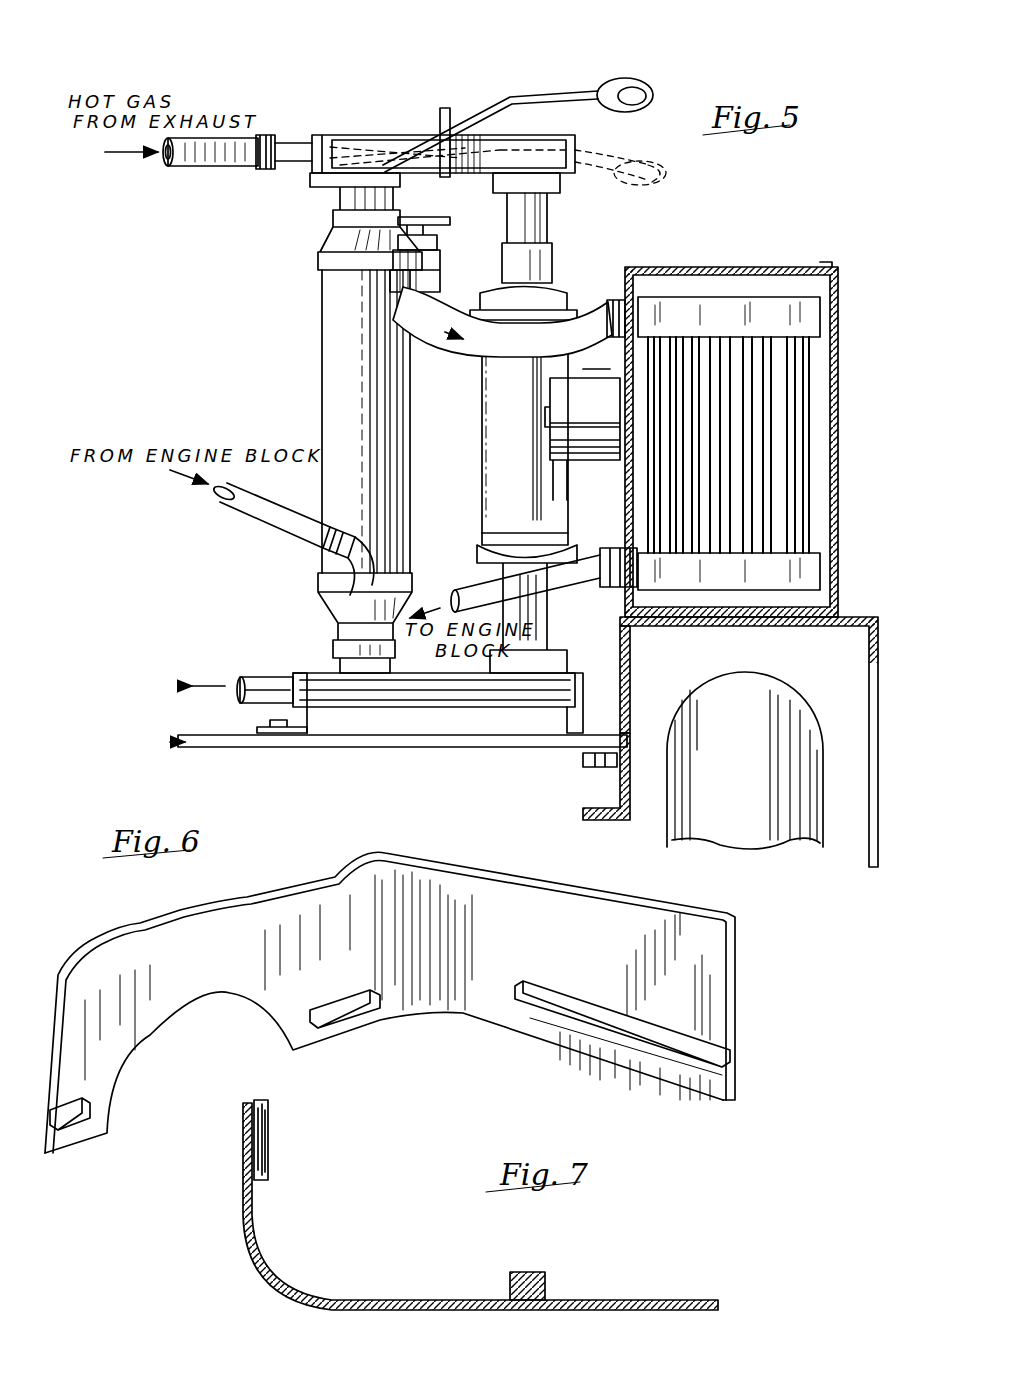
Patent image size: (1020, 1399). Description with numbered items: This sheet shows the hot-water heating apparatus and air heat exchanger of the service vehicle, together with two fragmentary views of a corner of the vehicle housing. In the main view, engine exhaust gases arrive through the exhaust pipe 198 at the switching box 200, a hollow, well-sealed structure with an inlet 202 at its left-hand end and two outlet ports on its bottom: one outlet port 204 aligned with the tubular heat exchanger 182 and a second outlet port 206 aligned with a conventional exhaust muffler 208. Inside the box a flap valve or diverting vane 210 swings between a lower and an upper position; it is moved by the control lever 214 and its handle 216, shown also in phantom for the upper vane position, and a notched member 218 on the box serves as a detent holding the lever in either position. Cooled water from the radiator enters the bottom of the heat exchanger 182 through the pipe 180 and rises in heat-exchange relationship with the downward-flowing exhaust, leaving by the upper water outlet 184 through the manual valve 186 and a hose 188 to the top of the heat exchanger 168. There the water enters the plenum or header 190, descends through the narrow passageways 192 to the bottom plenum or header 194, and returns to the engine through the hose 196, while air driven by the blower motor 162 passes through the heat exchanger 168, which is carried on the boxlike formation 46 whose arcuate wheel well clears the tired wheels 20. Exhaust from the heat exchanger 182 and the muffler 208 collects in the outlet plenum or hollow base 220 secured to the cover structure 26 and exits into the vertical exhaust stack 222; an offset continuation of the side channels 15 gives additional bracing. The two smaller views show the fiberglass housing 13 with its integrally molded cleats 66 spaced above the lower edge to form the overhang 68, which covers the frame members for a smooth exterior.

In FIG. 5, the exhaust pipe 198 is at (222, 165).
In FIG. 5, the switching box 200 is at (378, 135).
In FIG. 5, the inlet 202 is at (305, 135).
In FIG. 5, the outlet port 204 is at (350, 180).
In FIG. 5, the outlet port 206 is at (628, 180).
In FIG. 5, the exhaust muffler 208 is at (482, 478).
In FIG. 5, the flap valve or diverting vane 210 is at (350, 135).
In FIG. 5, the control lever 214 is at (503, 103).
In FIG. 5, the handle 216 is at (628, 85).
In FIG. 5, the notched member 218 is at (440, 120).
In FIG. 5, the outlet plenum or hollow base 220 is at (455, 712).
In FIG. 5, the exhaust stack 222 is at (265, 690).
In FIG. 5, the pipe 180 is at (288, 527).
In FIG. 5, the tubular heat exchanger 182 is at (325, 384).
In FIG. 5, the upper water outlet 184 is at (372, 305).
In FIG. 5, the manual valve 186 is at (395, 283).
In FIG. 5, the hose 188 is at (510, 352).
In FIG. 5, the plenum or header 190 is at (728, 300).
In FIG. 5, the narrow passageways 192 is at (800, 455).
In FIG. 5, the bottom plenum or header 194 is at (800, 580).
In FIG. 5, the hose 196 is at (600, 575).
In FIG. 5, the motor 162 is at (582, 439).
In FIG. 5, the heat exchanger 168 is at (812, 357).
In FIG. 5, the cover structure 26 is at (365, 750).
In FIG. 5, the boxlike formation 46 is at (805, 630).
In FIG. 5, the tired wheels 20 is at (748, 790).
In FIG. 5, the continuation of side channels 15 is at (585, 805).
In FIG. 6, the housing 13 is at (357, 932).
In FIG. 7, the housing 13 is at (398, 1310).
In FIG. 6, the cleats 66 is at (75, 1095).
In FIG. 7, the cleats 66 is at (262, 1152).
In FIG. 6, the overhang 68 is at (610, 1052).